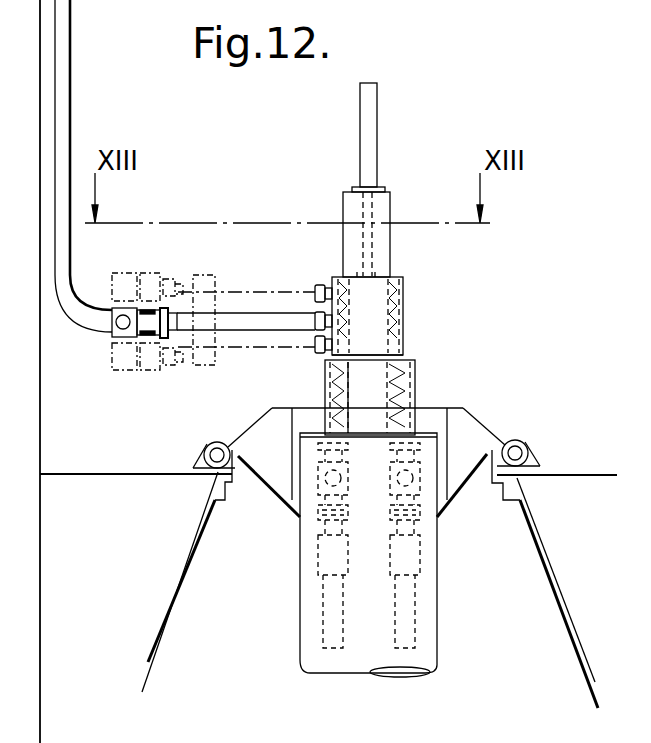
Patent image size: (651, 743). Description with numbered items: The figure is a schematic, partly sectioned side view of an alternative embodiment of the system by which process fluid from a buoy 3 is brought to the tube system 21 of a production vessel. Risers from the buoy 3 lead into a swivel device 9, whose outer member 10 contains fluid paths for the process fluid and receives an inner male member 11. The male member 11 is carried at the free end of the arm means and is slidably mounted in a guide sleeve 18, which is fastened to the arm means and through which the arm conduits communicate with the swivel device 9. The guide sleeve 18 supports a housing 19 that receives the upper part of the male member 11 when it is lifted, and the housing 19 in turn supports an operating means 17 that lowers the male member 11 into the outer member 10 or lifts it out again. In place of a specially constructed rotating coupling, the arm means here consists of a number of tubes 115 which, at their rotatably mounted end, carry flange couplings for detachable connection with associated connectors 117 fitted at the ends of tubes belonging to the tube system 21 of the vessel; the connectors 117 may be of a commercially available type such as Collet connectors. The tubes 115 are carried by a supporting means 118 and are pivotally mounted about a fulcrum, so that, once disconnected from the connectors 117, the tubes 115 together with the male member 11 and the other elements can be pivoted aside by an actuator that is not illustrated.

The buoy 3 is at (178, 580).
The swivel device 9 is at (413, 350).
The outer member 10 is at (418, 393).
The male member 11 is at (367, 372).
The operating means 17 is at (368, 163).
The guide sleeve 18 is at (400, 307).
The housing 19 is at (391, 200).
The tube system 21 is at (72, 101).
The tubes 115 is at (237, 332).
The connectors 117 is at (168, 277).
The supporting means 118 is at (218, 277).